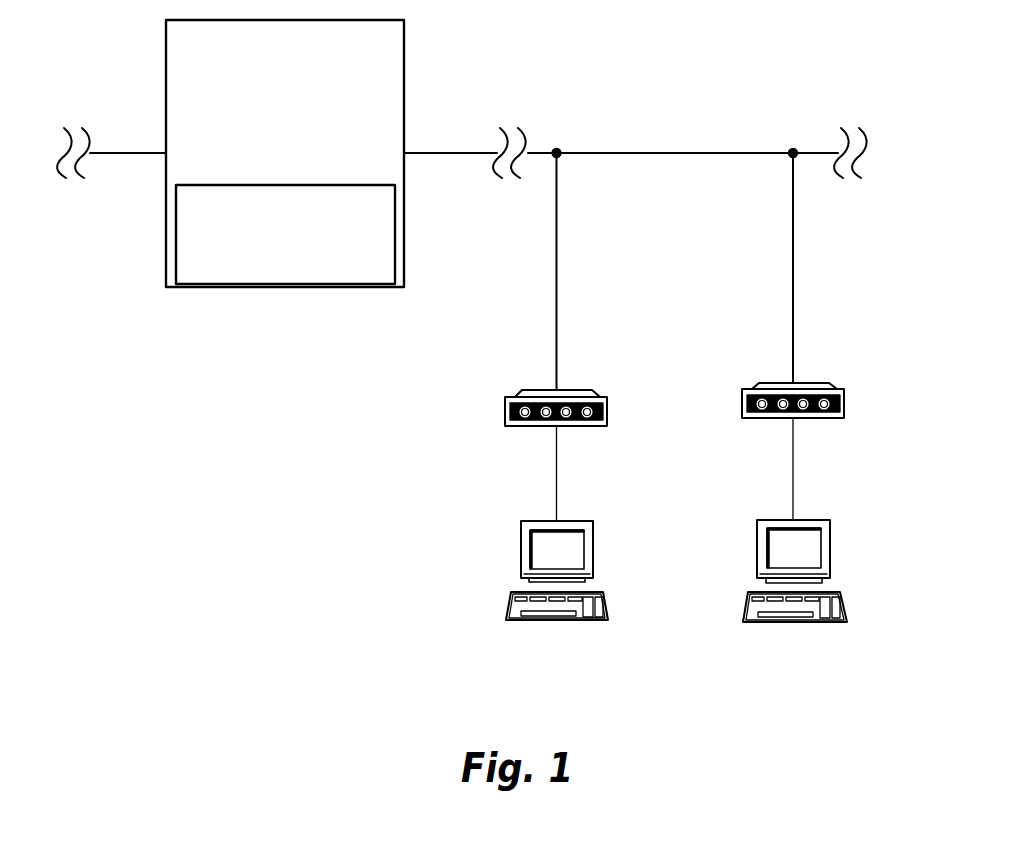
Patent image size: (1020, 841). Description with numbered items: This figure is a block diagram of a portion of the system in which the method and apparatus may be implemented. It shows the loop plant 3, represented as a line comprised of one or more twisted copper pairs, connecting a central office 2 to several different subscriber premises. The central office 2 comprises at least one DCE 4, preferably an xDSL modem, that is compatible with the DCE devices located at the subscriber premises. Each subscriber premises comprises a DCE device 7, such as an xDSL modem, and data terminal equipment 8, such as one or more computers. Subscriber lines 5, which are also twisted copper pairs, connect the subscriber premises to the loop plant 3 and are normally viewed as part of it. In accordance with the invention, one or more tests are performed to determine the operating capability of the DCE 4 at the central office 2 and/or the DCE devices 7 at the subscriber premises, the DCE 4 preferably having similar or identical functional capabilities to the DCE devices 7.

The central office 2 is at (269, 127).
The loop plant 3 is at (438, 153).
The DCE 4 is at (278, 261).
The subscriber lines 5 is at (557, 318).
The DCE device 7 is at (583, 390).
The data terminal equipment 8 is at (593, 543).